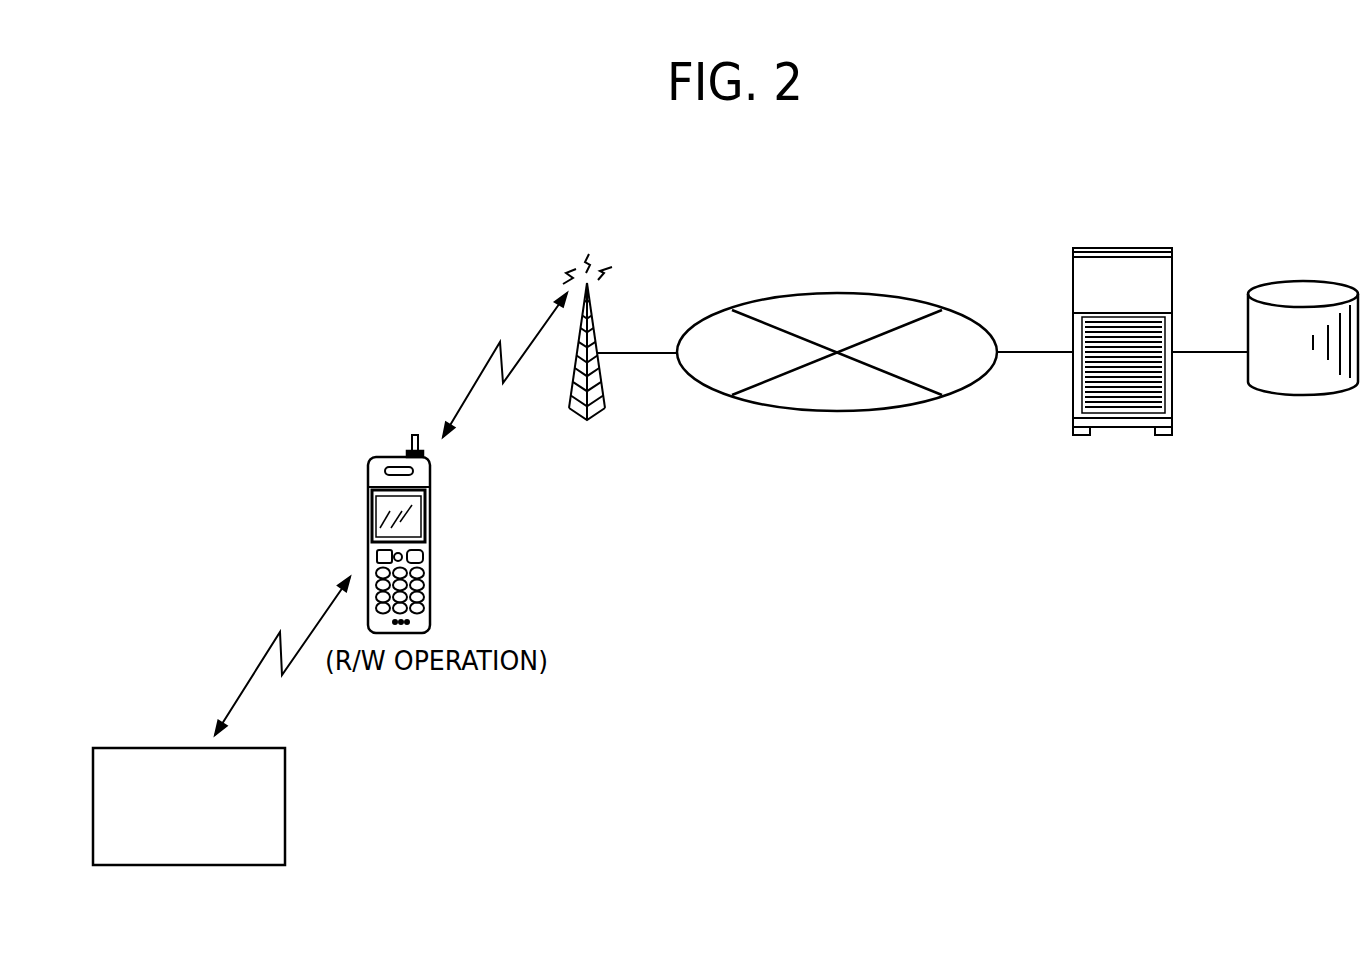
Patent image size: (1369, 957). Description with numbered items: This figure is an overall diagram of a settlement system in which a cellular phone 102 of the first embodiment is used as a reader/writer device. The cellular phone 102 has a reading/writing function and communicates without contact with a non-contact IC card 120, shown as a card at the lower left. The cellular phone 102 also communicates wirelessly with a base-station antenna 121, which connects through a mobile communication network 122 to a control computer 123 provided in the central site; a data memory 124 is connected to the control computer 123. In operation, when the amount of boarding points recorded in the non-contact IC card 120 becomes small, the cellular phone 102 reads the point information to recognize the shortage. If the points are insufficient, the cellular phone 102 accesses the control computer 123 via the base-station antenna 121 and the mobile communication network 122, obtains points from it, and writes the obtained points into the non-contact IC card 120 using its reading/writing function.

The cellular phone 102 is at (432, 547).
The non-contact IC card 120 is at (286, 800).
The base-station antenna 121 is at (591, 299).
The mobile communication network 122 is at (841, 293).
The control computer 123 is at (1126, 247).
The data memory 124 is at (1310, 282).